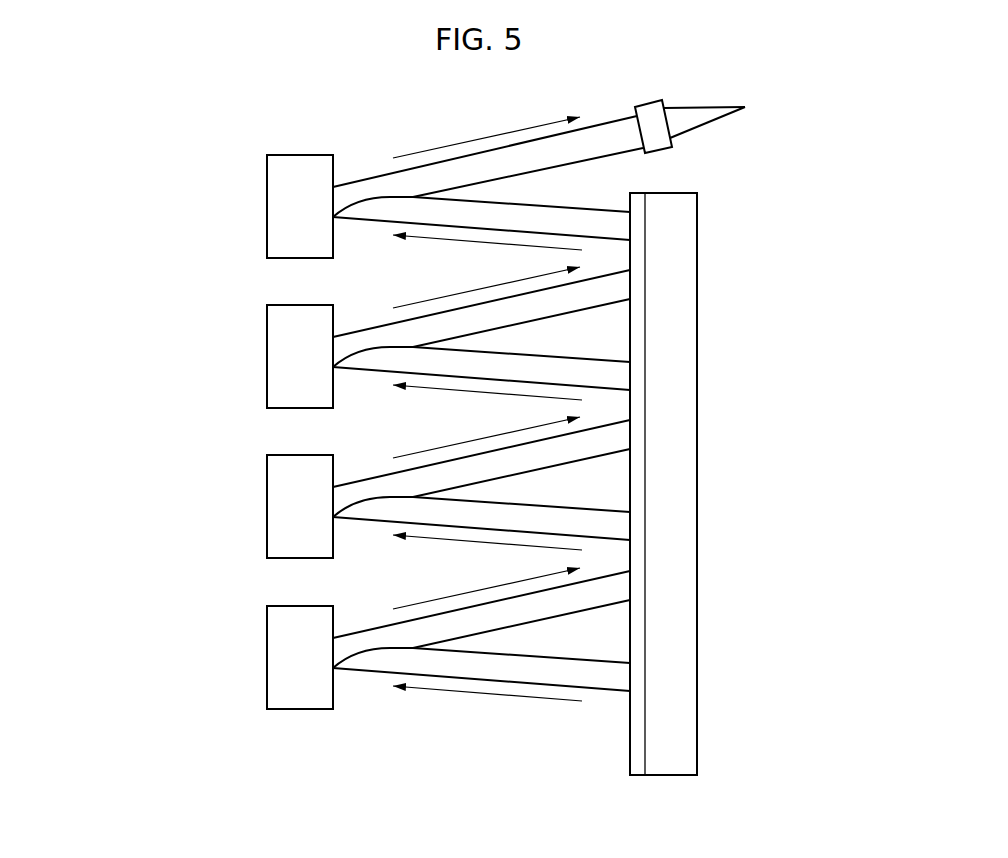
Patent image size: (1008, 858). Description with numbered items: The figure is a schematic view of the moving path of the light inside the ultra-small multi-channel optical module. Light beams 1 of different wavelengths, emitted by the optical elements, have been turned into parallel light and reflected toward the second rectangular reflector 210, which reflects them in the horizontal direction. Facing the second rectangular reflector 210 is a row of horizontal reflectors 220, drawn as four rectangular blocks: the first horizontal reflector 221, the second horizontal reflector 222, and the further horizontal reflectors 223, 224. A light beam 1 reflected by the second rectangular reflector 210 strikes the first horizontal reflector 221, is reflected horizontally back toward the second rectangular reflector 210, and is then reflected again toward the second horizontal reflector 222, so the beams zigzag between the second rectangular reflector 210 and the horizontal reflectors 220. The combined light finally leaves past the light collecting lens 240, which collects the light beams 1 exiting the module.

The light beam 1 is at (383, 673).
The second rectangular reflector 210 is at (697, 540).
The horizontal reflectors 220 is at (139, 229).
The first horizontal reflector 221 is at (267, 660).
The second horizontal reflector 222 is at (267, 510).
The third light source 223 is at (267, 356).
The fourth light source 224 is at (267, 206).
The light collecting lens 240 is at (658, 152).